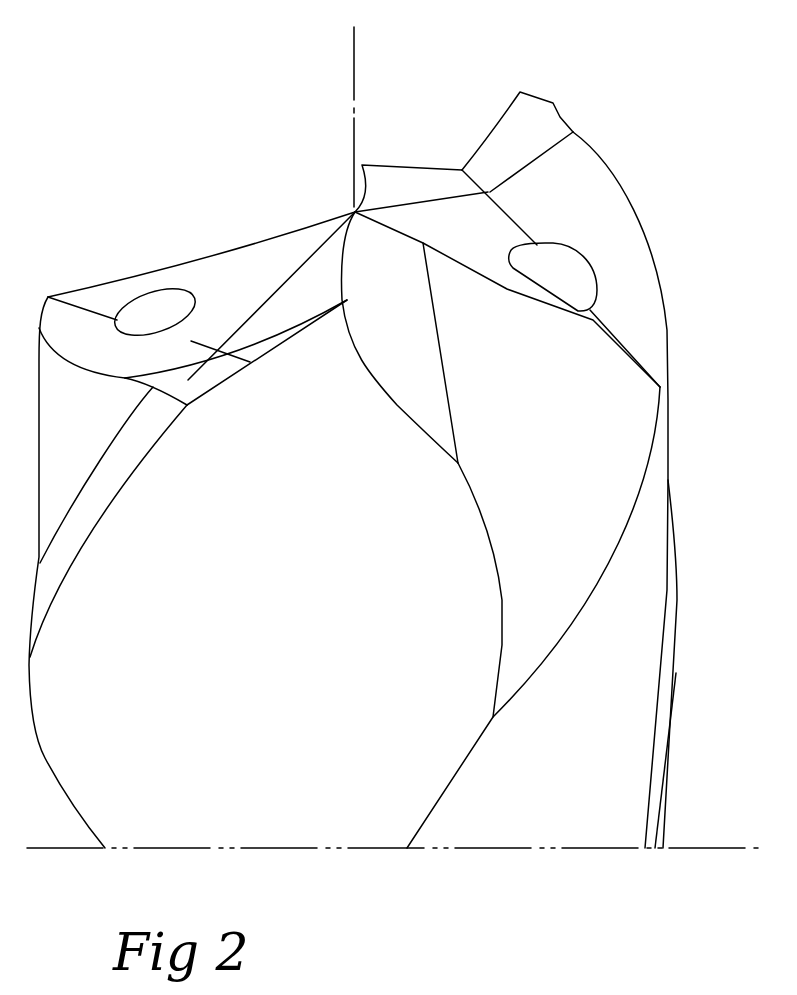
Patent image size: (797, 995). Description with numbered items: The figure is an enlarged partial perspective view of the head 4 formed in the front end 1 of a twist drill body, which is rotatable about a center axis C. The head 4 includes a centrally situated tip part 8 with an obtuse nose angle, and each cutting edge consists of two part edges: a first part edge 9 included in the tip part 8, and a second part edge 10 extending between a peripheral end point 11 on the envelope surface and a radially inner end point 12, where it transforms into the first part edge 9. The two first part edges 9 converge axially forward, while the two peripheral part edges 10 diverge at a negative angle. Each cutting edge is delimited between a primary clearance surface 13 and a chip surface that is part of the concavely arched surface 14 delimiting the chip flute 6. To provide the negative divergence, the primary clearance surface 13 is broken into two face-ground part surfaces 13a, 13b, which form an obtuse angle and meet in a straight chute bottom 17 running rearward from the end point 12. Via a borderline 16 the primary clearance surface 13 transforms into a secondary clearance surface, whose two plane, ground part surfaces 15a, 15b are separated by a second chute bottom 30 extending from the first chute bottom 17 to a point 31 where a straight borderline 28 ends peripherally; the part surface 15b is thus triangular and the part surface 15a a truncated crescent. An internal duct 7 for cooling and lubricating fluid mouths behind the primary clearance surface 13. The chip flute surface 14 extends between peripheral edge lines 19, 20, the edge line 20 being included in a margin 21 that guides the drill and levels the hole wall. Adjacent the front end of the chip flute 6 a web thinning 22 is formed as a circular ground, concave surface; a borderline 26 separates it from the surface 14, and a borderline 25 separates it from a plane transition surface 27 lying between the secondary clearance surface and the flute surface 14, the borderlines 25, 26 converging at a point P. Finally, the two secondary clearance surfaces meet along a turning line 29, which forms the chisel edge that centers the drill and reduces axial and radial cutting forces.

The front end 1 is at (637, 167).
The head 4 is at (167, 205).
The chip flute 6 is at (420, 783).
The internal duct 7 is at (567, 288).
The tip part 8 is at (338, 199).
The first part edge 9 is at (437, 167).
The second part edge 10 is at (495, 140).
The peripheral end point 11 is at (190, 405).
The radially inner end point 12 is at (250, 362).
The primary clearance surface 13 is at (161, 378).
The part surface 13a is at (511, 142).
The part surface 13b is at (380, 198).
The surface delimiting the chip flute 14 is at (285, 692).
The second part surface 15a is at (558, 215).
The second part surface 15b is at (445, 243).
The borderline 16 is at (295, 275).
The chute bottom 17 is at (236, 350).
The peripheral edge line 19 is at (470, 743).
The edge line 20 is at (120, 485).
The margin 21 is at (52, 562).
The web thinning 22 is at (378, 337).
The borderline 25 is at (444, 347).
The borderline 26 is at (400, 393).
The transition surface 27 is at (540, 455).
The borderline 28 is at (563, 330).
The turning line 29 is at (362, 216).
The second chute bottom 30 is at (85, 302).
The point 31 is at (660, 387).
The center axis C is at (355, 57).
The point P is at (457, 467).